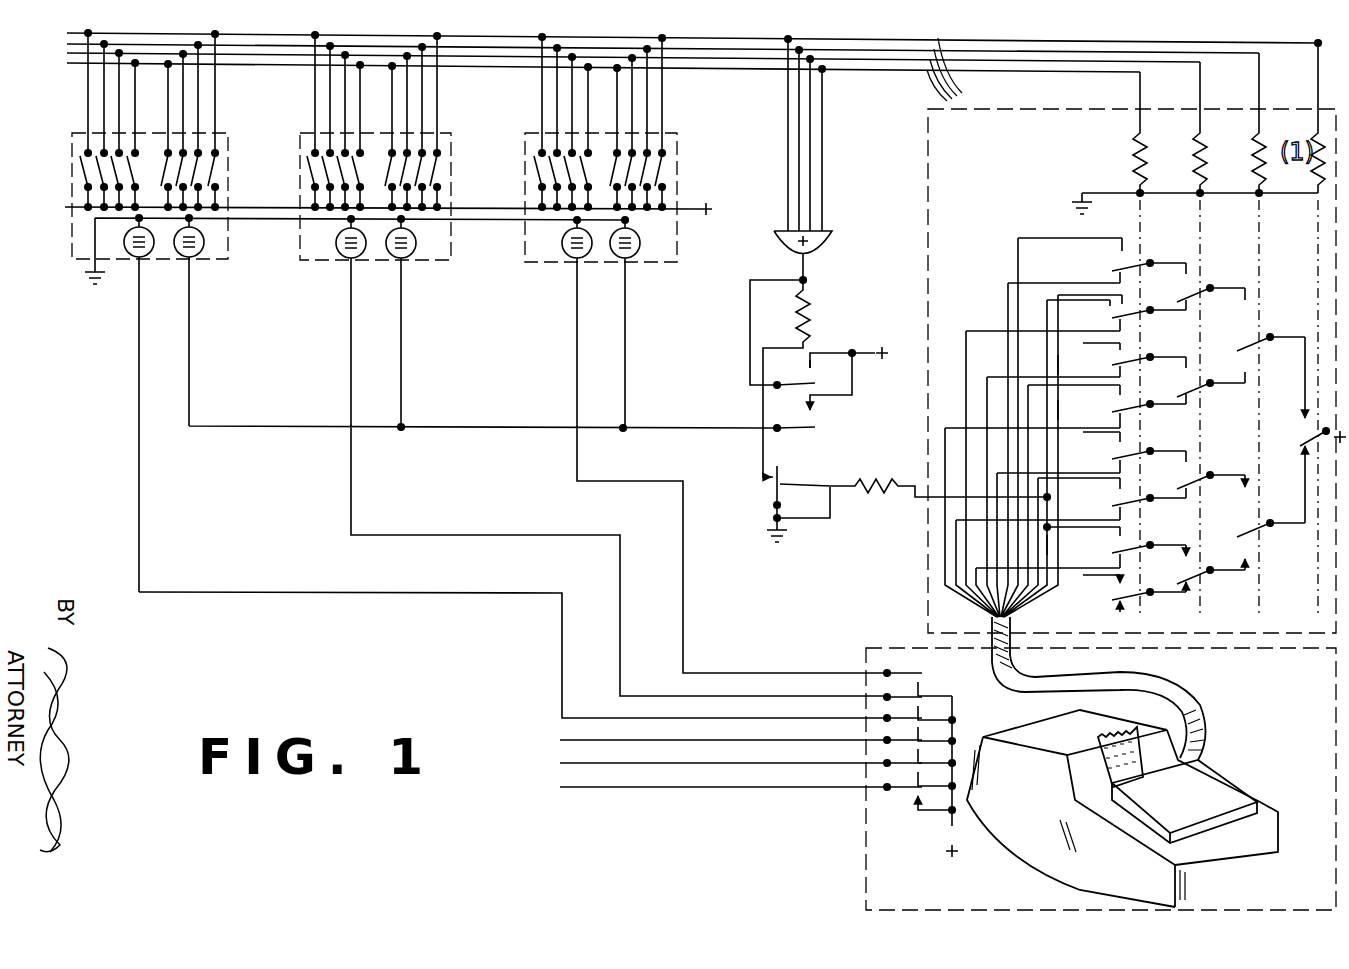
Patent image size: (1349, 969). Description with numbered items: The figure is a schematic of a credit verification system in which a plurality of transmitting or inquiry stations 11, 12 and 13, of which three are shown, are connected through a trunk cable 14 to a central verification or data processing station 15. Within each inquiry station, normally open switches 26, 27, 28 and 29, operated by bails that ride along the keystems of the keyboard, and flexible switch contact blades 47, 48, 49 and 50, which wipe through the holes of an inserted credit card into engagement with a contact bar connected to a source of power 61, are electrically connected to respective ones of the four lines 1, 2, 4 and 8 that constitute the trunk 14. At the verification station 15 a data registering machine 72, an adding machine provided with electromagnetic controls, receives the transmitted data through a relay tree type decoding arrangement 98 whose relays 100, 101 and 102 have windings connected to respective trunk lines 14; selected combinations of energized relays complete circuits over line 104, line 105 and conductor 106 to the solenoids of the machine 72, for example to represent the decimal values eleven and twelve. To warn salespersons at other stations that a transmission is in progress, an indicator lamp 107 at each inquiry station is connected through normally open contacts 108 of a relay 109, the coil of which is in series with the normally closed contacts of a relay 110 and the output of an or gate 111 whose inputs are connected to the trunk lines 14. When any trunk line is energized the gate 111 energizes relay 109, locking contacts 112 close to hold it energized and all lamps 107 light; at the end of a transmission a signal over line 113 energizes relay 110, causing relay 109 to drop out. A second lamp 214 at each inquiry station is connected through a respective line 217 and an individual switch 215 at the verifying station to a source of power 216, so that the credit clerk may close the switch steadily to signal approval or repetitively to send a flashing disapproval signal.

The signal line 1 is at (66, 34).
The signal line 2 is at (66, 45).
The signal line 4 is at (66, 54).
The signal line 8 is at (948, 100).
The inquiry station 11 is at (146, 172).
The inquiry station 12 is at (428, 262).
The inquiry station 13 is at (660, 263).
The trunk cable 14 is at (959, 72).
The central verification station 15 is at (1074, 754).
The normally open switch 26 is at (81, 166).
The normally open switch 27 is at (97, 178).
The normally open switch 28 is at (102, 186).
The normally open switch 29 is at (100, 211).
The flexible switch contact blade 47 is at (208, 176).
The flexible switch contact blade 48 is at (198, 168).
The flexible switch contact blade 49 is at (182, 162).
The flexible switch contact blade 50 is at (164, 158).
The source of power 61 is at (712, 211).
The data registering machine 72 is at (1218, 785).
The relay tree decoding arrangement 98 is at (1042, 238).
The relay 100 is at (1195, 343).
The relay 101 is at (1203, 338).
The relay 102 is at (1263, 334).
The line 104 is at (1062, 366).
The line 105 is at (1062, 412).
The conductor 106 is at (1075, 548).
The indicator lamp 107 is at (690, 247).
The normally open contacts 108 is at (806, 427).
The relay 109 is at (812, 318).
The relay 110 is at (834, 518).
The or gate 111 is at (824, 228).
The locking contacts 112 is at (798, 385).
The line 113 is at (936, 497).
The second lamp 214 is at (132, 262).
The individual switch 215 is at (924, 673).
The source of power 216 is at (950, 823).
The line 217 is at (139, 558).